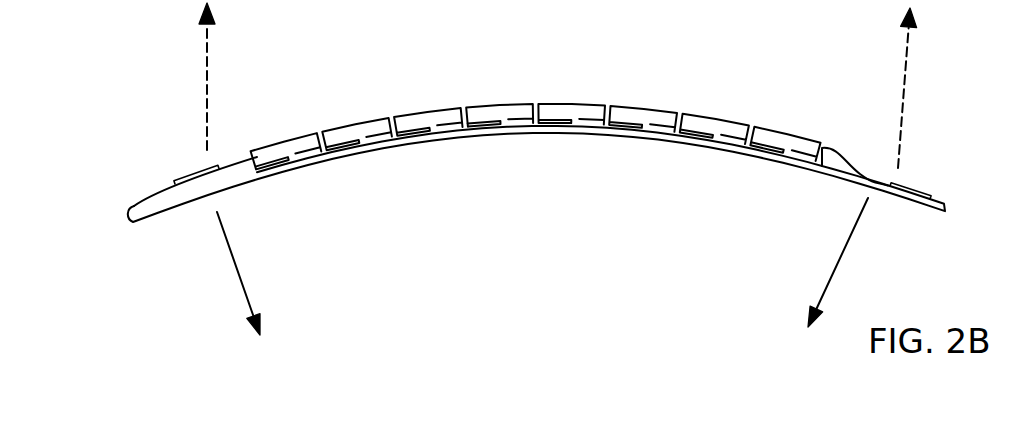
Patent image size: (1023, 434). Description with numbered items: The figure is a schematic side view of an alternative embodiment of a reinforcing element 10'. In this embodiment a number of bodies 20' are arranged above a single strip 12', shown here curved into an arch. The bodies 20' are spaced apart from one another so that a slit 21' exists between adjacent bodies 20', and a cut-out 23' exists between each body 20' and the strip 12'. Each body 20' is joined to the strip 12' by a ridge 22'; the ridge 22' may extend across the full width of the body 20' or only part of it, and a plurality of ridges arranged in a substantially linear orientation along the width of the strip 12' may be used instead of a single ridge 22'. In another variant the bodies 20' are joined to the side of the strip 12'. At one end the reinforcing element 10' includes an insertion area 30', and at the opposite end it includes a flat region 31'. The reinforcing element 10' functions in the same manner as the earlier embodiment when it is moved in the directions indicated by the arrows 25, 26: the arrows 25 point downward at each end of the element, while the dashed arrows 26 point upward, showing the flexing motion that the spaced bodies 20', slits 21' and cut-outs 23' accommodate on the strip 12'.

The reinforcing element 10' is at (536, 132).
The strip 12' is at (536, 174).
The body 20' is at (428, 103).
The slit 21' is at (510, 116).
The ridge 22' is at (496, 144).
The cut-out 23' is at (357, 154).
The arrow 25 is at (245, 303).
The arrow 26 is at (207, 42).
The insertion area 30' is at (910, 212).
The flat region 31' is at (195, 198).